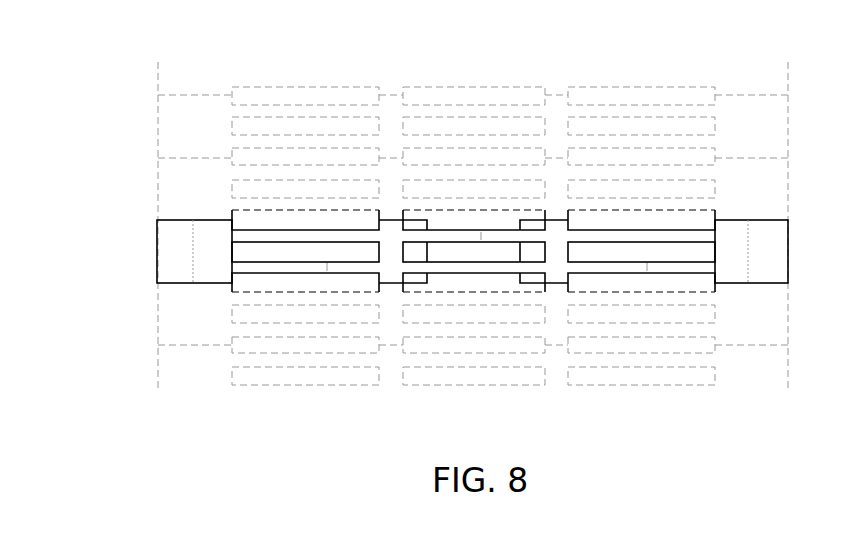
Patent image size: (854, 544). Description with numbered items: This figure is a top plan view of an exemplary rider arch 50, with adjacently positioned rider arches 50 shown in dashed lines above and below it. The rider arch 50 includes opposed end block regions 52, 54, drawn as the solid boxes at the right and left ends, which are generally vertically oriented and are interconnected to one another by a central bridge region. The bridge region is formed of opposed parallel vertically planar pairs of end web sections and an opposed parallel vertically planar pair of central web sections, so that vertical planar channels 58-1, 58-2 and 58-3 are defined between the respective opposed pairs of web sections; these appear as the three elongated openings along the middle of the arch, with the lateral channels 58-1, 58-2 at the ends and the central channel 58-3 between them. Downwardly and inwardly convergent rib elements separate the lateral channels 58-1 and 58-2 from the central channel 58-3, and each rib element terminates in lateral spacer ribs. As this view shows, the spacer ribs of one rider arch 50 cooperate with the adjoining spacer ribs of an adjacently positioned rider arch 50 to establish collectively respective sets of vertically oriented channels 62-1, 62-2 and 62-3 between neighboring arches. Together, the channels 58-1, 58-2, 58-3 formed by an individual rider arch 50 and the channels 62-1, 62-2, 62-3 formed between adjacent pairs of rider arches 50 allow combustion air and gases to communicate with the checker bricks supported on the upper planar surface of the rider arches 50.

The rider arch 50 is at (180, 183).
The end block region 52 is at (747, 268).
The end block region 54 is at (224, 265).
The lateral channel 58-1 is at (592, 254).
The lateral channel 58-2 is at (259, 254).
The central channel 58-3 is at (439, 254).
The vertically oriented channels 62-1 is at (657, 221).
The vertically oriented channels 62-2 is at (326, 212).
The vertically oriented channels 62-3 is at (502, 221).